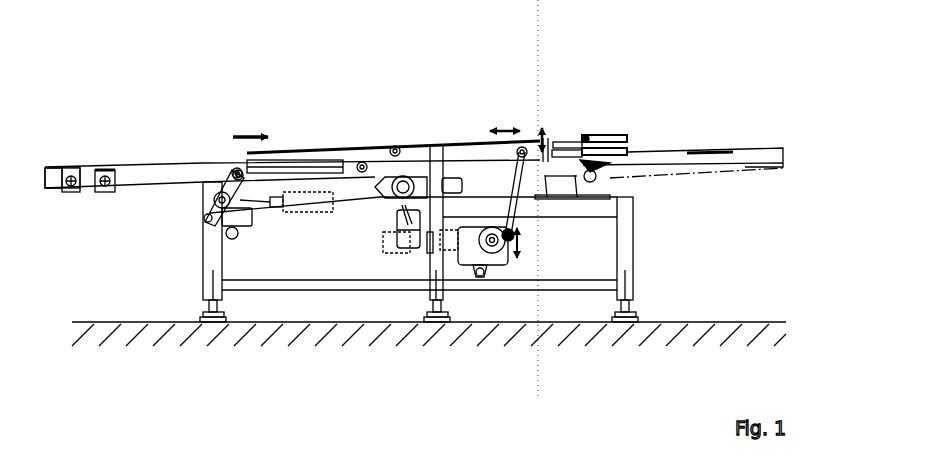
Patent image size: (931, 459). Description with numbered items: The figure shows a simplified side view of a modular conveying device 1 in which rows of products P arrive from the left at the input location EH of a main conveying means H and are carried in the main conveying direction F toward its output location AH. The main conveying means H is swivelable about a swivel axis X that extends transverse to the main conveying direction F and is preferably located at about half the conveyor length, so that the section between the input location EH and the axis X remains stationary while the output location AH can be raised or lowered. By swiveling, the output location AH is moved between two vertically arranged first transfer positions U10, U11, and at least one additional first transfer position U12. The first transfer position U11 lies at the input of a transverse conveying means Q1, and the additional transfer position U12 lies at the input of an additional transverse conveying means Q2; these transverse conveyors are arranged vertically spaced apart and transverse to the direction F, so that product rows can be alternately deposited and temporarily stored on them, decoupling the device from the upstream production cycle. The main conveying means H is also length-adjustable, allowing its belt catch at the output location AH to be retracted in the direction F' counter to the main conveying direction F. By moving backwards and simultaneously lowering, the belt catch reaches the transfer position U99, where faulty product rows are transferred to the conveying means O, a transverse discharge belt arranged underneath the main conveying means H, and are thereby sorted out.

The modular conveying device 1 is at (314, 79).
The input location of the main conveying means EH is at (93, 170).
The products P is at (180, 162).
The main conveying direction F is at (387, 116).
The retraction direction F' is at (480, 103).
The swivel axis X is at (397, 147).
The main conveying means H is at (468, 153).
The output location of the main conveying means AH is at (585, 137).
The additional first transfer position U12 is at (584, 138).
The first transfer position U11 is at (587, 142).
The first transfer position U10 is at (587, 166).
The transfer position for discharge U99 is at (558, 182).
The transverse conveying means Q1 is at (625, 150).
The additional transverse conveying means Q2 is at (622, 137).
The conveying means for discharge O is at (567, 195).